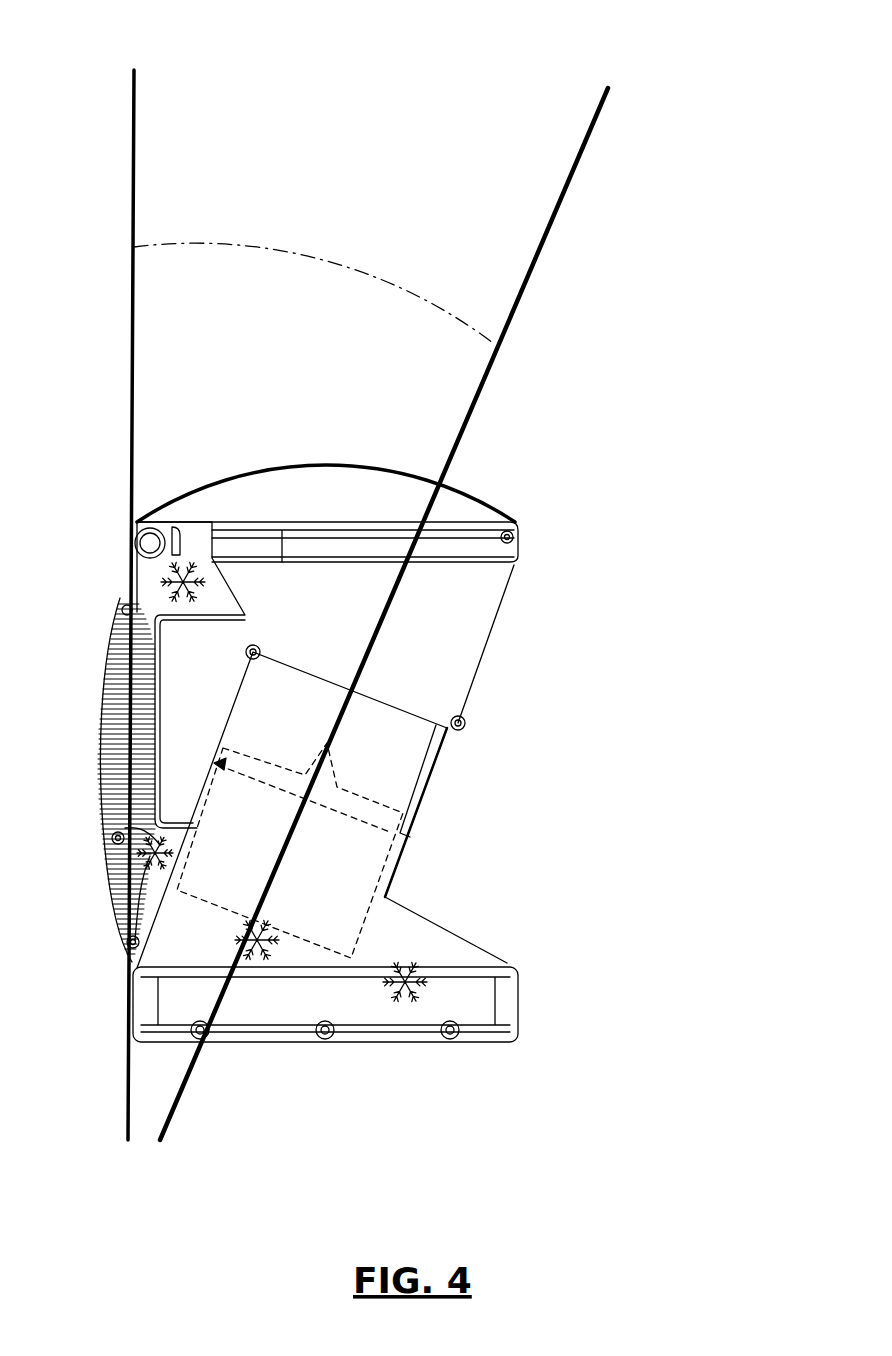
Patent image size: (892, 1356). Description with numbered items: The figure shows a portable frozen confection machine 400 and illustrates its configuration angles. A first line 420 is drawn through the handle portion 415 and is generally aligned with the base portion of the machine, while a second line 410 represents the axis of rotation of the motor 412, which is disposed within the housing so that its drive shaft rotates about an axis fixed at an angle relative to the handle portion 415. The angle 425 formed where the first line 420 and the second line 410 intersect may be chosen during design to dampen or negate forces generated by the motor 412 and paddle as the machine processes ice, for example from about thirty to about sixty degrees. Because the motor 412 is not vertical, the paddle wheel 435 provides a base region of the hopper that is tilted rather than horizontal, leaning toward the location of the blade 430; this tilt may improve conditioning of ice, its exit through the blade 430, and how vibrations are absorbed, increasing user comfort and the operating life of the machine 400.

The frozen confection machine 400 is at (538, 493).
The second line 410 is at (550, 230).
The motor 412 is at (348, 865).
The handle portion 415 is at (112, 682).
The first line 420 is at (134, 127).
The angle 425 is at (277, 249).
The blade 430 is at (427, 793).
The paddle wheel 435 is at (372, 797).